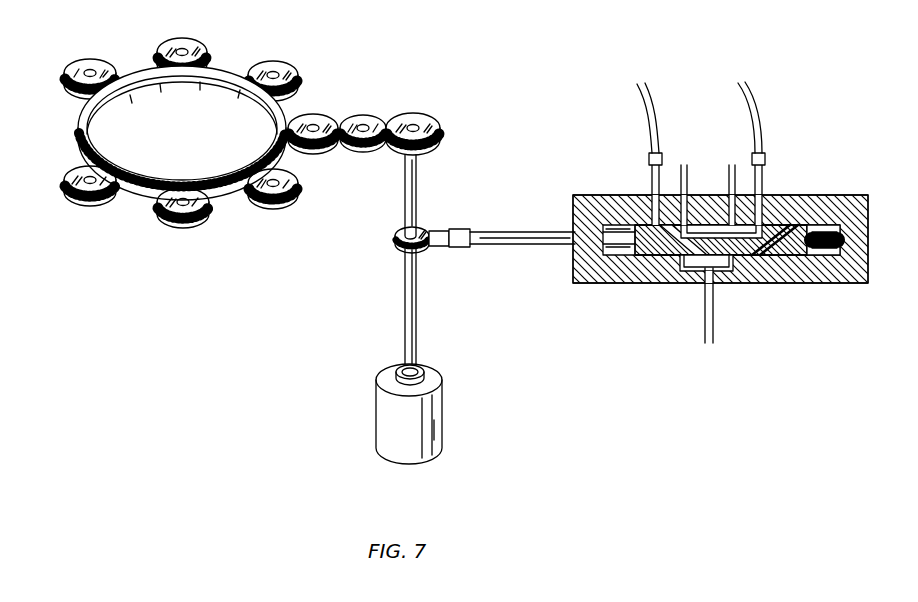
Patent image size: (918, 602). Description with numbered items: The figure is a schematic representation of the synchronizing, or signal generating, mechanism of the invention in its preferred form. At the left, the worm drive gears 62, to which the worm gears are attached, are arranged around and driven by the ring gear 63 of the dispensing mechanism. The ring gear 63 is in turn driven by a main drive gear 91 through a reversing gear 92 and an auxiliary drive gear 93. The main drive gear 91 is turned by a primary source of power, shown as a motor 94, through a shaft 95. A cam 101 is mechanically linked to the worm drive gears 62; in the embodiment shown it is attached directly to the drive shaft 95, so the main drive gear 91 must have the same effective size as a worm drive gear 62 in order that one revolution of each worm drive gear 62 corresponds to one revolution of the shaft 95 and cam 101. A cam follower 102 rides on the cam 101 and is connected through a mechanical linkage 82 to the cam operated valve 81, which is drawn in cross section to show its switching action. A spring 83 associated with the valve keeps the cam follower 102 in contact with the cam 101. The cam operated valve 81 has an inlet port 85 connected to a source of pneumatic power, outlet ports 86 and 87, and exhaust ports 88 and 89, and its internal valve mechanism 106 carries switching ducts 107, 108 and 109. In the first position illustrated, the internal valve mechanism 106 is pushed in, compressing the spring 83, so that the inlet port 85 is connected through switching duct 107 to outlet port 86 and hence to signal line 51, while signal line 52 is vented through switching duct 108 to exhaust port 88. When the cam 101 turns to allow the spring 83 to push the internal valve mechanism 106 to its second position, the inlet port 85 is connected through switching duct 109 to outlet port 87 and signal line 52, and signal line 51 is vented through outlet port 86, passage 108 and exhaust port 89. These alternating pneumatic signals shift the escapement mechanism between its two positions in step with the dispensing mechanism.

The signal line 51 is at (642, 100).
The signal line 52 is at (756, 102).
The worm drive gear 62 is at (265, 62).
The ring gear 63 is at (222, 86).
The cam operated valve 81 is at (693, 212).
The mechanical linkage 82 is at (514, 232).
The spring 83 is at (822, 228).
The inlet port 85 is at (714, 325).
The outlet port 86 is at (652, 176).
The outlet port 87 is at (762, 174).
The exhaust port 88 is at (684, 165).
The exhaust port 89 is at (731, 163).
The main drive gear 91 is at (414, 113).
The reversing gear 92 is at (362, 114).
The auxiliary drive gear 93 is at (312, 113).
The motor 94 is at (443, 418).
The shaft 95 is at (417, 292).
The cam 101 is at (396, 237).
The cam follower 102 is at (458, 230).
The internal valve mechanism 106 is at (647, 257).
The switching duct 107 is at (670, 250).
The switching duct 108 is at (747, 242).
The switching duct 109 is at (780, 232).